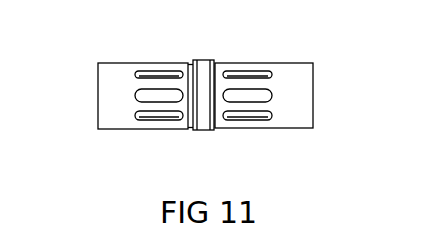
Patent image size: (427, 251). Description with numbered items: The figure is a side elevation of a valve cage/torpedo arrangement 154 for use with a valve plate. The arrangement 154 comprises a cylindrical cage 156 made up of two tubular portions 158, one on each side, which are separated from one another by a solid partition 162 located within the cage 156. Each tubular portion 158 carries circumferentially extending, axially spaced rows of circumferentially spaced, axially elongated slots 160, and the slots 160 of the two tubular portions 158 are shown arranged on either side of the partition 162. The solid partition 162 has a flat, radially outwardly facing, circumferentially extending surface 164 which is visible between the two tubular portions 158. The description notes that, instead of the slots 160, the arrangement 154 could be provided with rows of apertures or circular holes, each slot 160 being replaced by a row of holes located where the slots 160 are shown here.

The valve cage/torpedo arrangement 154 is at (317, 50).
The cylindrical cage 156 is at (120, 50).
The tubular portions 158 is at (131, 96).
The slots 160 is at (153, 92).
The solid partition 162 is at (203, 70).
The surface 164 is at (203, 131).